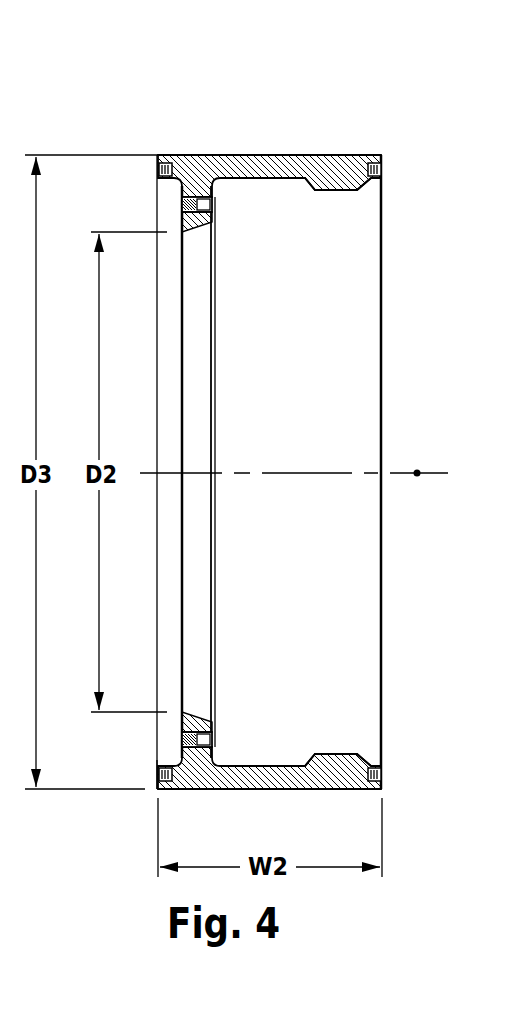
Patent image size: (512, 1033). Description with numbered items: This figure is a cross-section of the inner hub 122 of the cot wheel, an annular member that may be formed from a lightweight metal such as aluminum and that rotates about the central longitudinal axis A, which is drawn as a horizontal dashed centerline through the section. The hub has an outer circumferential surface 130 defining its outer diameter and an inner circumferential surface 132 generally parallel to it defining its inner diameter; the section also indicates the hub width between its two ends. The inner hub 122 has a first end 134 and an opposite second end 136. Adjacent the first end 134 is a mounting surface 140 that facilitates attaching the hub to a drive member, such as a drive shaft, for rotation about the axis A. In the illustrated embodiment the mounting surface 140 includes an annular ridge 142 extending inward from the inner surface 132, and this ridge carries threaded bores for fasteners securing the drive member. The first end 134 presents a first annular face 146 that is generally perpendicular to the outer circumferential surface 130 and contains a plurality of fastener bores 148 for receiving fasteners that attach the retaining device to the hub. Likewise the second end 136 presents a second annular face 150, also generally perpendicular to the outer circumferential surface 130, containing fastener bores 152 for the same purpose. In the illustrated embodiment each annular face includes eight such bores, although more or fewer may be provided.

The inner hub 122 is at (398, 117).
The outer circumferential surface 130 is at (253, 154).
The inner circumferential surface 132 is at (243, 180).
The first end 134 is at (141, 819).
The second end 136 is at (395, 748).
The mounting surface 140 is at (246, 710).
The annular ridge 142 is at (214, 722).
The first annular face 146 is at (157, 160).
The fastener bores 148 is at (158, 771).
The second annular face 150 is at (384, 160).
The fastener bores 152 is at (384, 171).
The central longitudinal axis A is at (417, 470).